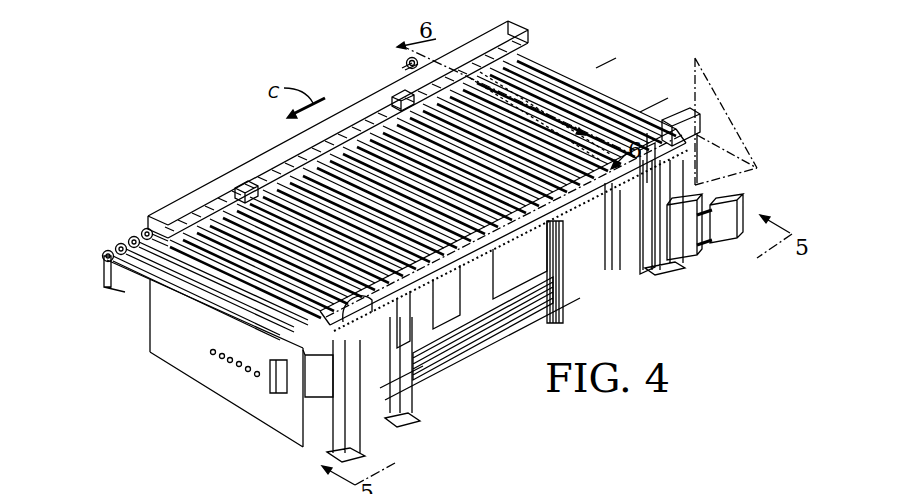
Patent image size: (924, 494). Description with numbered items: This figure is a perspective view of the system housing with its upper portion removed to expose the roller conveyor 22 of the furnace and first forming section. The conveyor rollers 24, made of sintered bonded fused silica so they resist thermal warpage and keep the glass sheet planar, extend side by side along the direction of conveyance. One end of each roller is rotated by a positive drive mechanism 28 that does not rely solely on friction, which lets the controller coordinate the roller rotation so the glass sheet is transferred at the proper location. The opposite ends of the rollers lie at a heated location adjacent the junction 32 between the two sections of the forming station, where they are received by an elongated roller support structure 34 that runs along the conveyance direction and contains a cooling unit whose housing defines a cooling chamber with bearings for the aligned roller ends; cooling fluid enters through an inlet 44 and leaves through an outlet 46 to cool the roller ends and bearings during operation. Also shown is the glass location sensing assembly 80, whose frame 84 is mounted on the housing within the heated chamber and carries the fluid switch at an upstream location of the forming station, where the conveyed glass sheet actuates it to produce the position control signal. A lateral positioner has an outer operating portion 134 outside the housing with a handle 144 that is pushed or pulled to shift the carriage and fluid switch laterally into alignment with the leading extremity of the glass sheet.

The roller conveyor 22 is at (616, 60).
The conveyor rollers 24 is at (567, 98).
The positive drive mechanism 28 is at (174, 207).
The junction 32 is at (697, 130).
The roller support structure 34 is at (562, 257).
The inlet 44 is at (607, 167).
The outlet 46 is at (355, 315).
The glass location sensing assembly 80 is at (648, 110).
The frame 84 is at (618, 100).
The outer operating portion 134 is at (394, 65).
The handle 144 is at (399, 62).